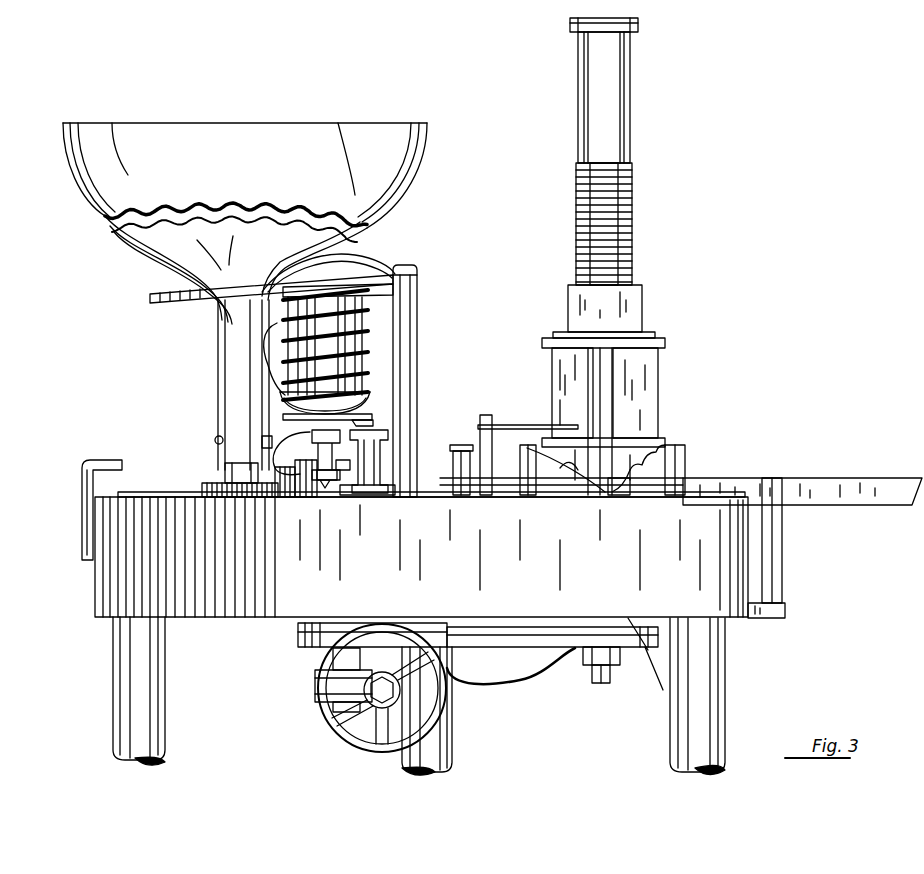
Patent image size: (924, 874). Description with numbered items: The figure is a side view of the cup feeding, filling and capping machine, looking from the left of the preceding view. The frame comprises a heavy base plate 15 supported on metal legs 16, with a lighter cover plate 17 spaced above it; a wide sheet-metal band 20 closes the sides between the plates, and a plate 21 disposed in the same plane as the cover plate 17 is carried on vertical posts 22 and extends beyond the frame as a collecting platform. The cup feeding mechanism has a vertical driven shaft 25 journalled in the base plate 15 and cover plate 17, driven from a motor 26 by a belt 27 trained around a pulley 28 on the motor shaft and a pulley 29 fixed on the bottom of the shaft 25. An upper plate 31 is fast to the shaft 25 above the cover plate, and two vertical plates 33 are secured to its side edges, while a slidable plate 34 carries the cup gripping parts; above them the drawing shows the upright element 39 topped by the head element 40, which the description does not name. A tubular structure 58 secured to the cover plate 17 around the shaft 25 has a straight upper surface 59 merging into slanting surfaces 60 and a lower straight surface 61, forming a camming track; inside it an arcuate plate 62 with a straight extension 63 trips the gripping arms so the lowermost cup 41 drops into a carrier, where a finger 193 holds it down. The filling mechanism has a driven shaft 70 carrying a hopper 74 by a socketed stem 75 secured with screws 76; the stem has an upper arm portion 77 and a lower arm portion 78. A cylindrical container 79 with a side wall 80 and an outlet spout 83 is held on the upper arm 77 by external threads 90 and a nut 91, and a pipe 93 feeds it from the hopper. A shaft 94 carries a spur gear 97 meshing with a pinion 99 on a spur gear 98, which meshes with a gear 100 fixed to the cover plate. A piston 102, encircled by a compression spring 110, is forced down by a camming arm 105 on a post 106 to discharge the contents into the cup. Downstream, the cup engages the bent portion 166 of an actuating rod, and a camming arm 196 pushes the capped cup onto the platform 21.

The base plate 15 is at (757, 619).
The legs 16 is at (167, 712).
The cover plate 17 is at (170, 492).
The band 20 is at (95, 585).
The plate 21 is at (882, 478).
The vertical posts 22 is at (783, 556).
The driven shaft 25 is at (600, 685).
The motor 26 is at (320, 718).
The belt 27 is at (512, 683).
The pulley 28 is at (302, 650).
The pulley 29 is at (563, 650).
The upper plate 31 is at (545, 345).
The vertical plates 33 is at (556, 382).
The slidable plate 34 is at (643, 300).
The shaft 39 is at (626, 85).
The cap 40 is at (639, 26).
The cup 41 is at (634, 218).
The tubular structure 58 is at (686, 462).
The upper surface 59 is at (645, 445).
The slanting surfaces 60 is at (566, 478).
The lower straight surface 61 is at (604, 492).
The arcuately shaped plate 62 is at (632, 488).
The straight extension 63 is at (640, 463).
The driven shaft 70 is at (225, 470).
The hopper 74 is at (427, 165).
The socketed stem 75 is at (222, 380).
The screws 76 is at (214, 440).
The upper arm portion 77 is at (287, 399).
The lower arm portion 78 is at (262, 448).
The cylindrical container 79 is at (372, 356).
The side wall 80 is at (368, 333).
The outlet spout 83 is at (372, 420).
The external threads 90 is at (358, 496).
The nut 91 is at (314, 433).
The pipe 93 is at (258, 322).
The shaft 94 is at (343, 472).
The spur gear 97 is at (325, 483).
The spur gear 98 is at (302, 497).
The pinion 99 is at (284, 497).
The gear 100 is at (232, 497).
The piston 102 is at (365, 292).
The camming arm 105 is at (150, 290).
The post 106 is at (418, 380).
The compression spring 110 is at (370, 312).
The bent portion 166 is at (102, 459).
The finger 193 is at (520, 425).
The camming arm 196 is at (512, 446).